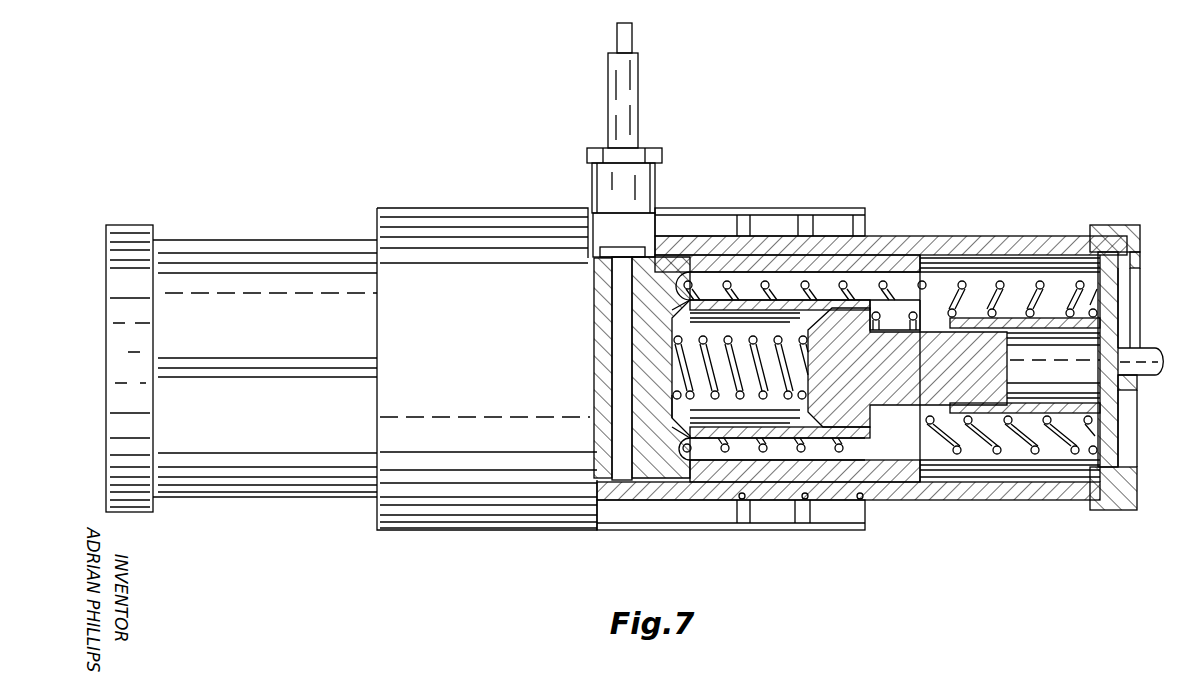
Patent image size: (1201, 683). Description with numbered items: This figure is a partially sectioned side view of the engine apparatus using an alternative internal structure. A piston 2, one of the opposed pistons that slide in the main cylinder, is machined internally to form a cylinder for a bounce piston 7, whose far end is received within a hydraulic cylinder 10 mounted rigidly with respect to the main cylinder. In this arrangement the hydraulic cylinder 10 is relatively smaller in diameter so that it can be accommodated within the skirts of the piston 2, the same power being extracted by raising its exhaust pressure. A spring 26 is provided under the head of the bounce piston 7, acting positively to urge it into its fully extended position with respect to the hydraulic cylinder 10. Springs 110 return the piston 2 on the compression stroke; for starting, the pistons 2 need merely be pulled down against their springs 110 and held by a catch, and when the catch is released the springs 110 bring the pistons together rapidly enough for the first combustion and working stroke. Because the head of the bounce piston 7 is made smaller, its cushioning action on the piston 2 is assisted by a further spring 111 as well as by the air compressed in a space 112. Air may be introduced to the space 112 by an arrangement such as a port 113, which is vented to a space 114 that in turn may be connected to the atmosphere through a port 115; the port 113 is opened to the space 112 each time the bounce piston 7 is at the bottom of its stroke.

The piston 2 is at (638, 314).
The bounce piston 7 is at (893, 347).
The hydraulic cylinder 10 is at (1055, 323).
The spring 26 is at (950, 330).
The spring 110 is at (1000, 290).
The spring 111 is at (740, 396).
The space 112 is at (773, 332).
The port 113 is at (878, 298).
The space 114 is at (1030, 299).
The port 115 is at (1113, 298).